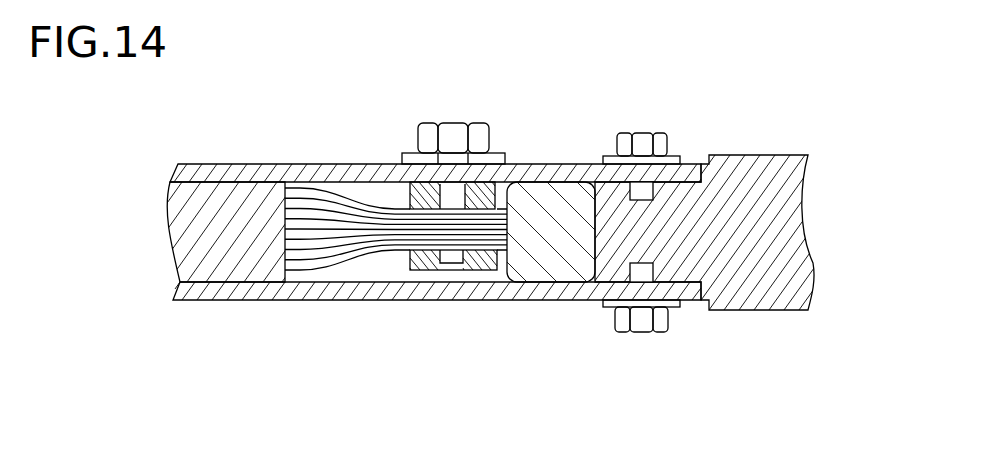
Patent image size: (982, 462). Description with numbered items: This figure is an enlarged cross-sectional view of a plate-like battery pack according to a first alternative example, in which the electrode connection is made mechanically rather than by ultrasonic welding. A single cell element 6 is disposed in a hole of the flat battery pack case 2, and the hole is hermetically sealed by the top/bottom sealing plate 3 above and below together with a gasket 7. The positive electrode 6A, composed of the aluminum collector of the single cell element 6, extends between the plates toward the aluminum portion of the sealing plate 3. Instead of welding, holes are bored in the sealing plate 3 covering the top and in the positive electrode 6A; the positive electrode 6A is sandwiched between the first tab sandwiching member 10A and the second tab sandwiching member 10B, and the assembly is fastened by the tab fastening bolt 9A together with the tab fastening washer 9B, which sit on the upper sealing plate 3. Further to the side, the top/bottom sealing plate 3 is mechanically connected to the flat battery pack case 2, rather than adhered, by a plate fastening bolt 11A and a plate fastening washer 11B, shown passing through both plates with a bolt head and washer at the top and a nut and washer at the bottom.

The flat battery pack case 2 is at (750, 175).
The top/bottom sealing plate 3 is at (222, 175).
The single cell element 6 is at (203, 212).
The positive electrode 6A is at (377, 208).
The gasket 7 is at (550, 253).
The tab fastening bolt 9A is at (452, 135).
The tab fastening washer 9B is at (495, 155).
The first tab sandwiching member 10A is at (413, 195).
The second tab sandwiching member 10B is at (420, 270).
The plate fastening bolt 11A is at (640, 143).
The plate fastening washer 11B is at (677, 155).